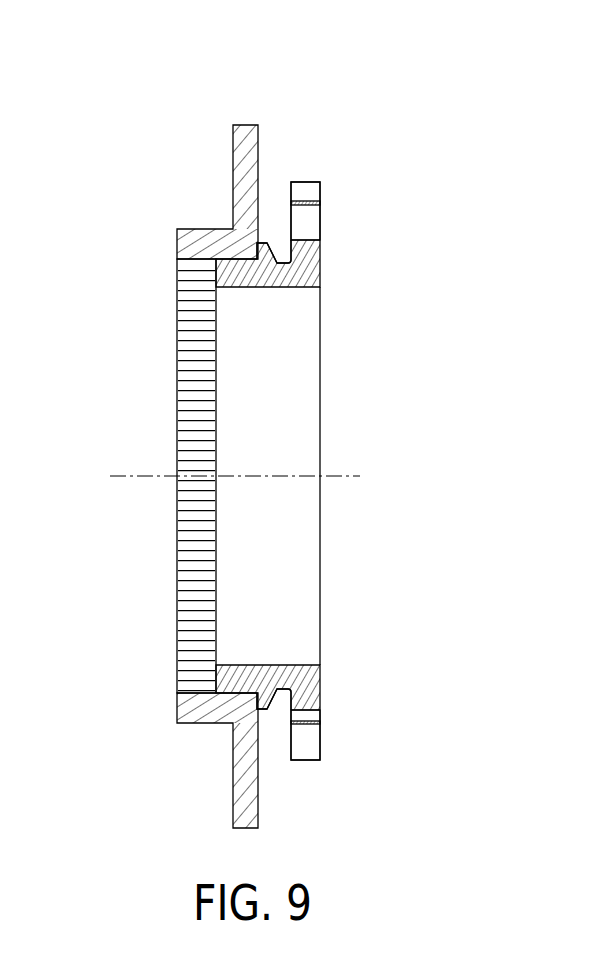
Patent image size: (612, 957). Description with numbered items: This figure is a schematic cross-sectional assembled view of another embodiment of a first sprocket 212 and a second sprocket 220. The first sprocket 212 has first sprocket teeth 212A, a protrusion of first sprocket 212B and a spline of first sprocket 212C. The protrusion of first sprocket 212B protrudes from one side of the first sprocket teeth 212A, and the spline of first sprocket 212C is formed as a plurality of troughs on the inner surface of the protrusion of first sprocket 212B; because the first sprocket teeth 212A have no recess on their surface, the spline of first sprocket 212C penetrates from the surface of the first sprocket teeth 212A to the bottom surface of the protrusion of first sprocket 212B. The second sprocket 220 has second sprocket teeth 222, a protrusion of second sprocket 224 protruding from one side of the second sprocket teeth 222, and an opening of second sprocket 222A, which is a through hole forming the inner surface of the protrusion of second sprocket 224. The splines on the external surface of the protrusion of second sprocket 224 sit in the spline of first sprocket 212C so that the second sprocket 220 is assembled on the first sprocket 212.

The first sprocket 212 is at (173, 439).
The first sprocket teeth 212A is at (245, 132).
The protrusion of first sprocket 212B is at (193, 243).
The spline of first sprocket 212C is at (193, 387).
The second sprocket 220 is at (316, 427).
The second sprocket teeth 222 is at (310, 194).
The protrusion of second sprocket 224 is at (283, 277).
The opening of second sprocket 222A is at (294, 422).